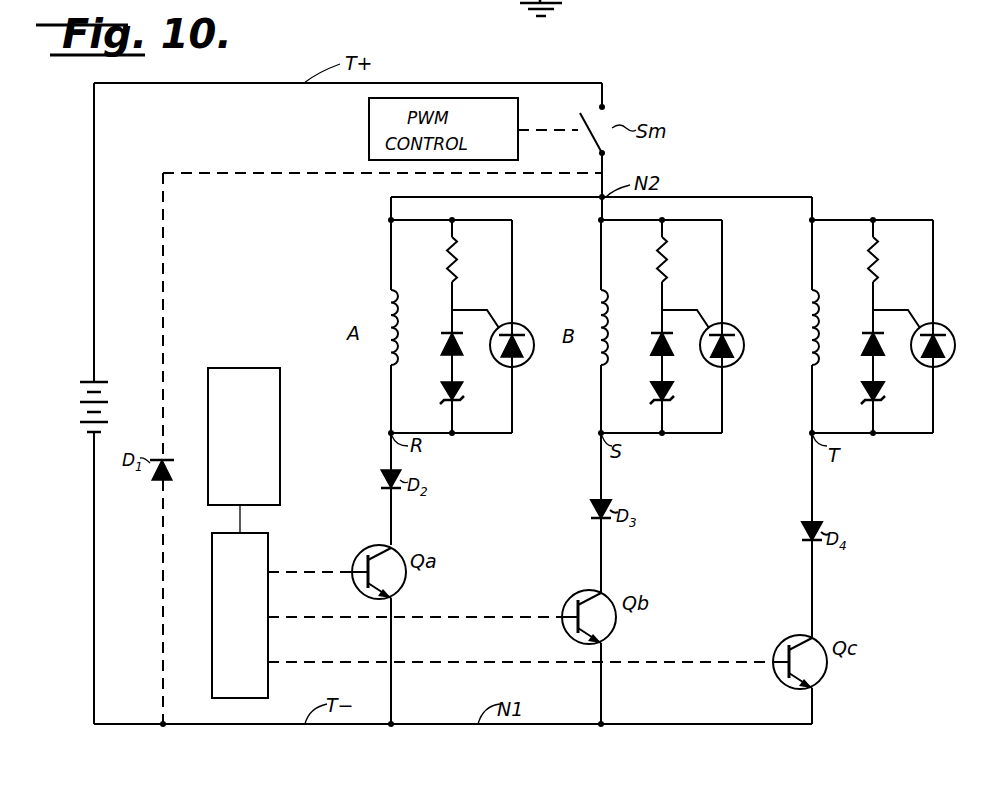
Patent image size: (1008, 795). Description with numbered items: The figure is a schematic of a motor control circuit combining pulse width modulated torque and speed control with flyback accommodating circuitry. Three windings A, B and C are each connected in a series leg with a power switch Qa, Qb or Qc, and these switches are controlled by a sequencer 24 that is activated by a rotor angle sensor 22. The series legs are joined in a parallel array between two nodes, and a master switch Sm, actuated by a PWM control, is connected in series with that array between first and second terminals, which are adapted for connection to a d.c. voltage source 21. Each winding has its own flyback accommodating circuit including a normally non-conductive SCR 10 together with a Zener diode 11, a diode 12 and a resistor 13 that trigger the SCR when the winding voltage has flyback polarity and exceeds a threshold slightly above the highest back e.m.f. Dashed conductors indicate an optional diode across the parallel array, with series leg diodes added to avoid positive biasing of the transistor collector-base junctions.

The SCR 10 is at (518, 328).
The Zener diode 11 is at (456, 402).
The diode 12 is at (455, 350).
The resistor 13 is at (452, 272).
The d.c. voltage source 21 is at (102, 382).
The rotor angle sensor 22 is at (243, 368).
The sequencer 24 is at (270, 560).